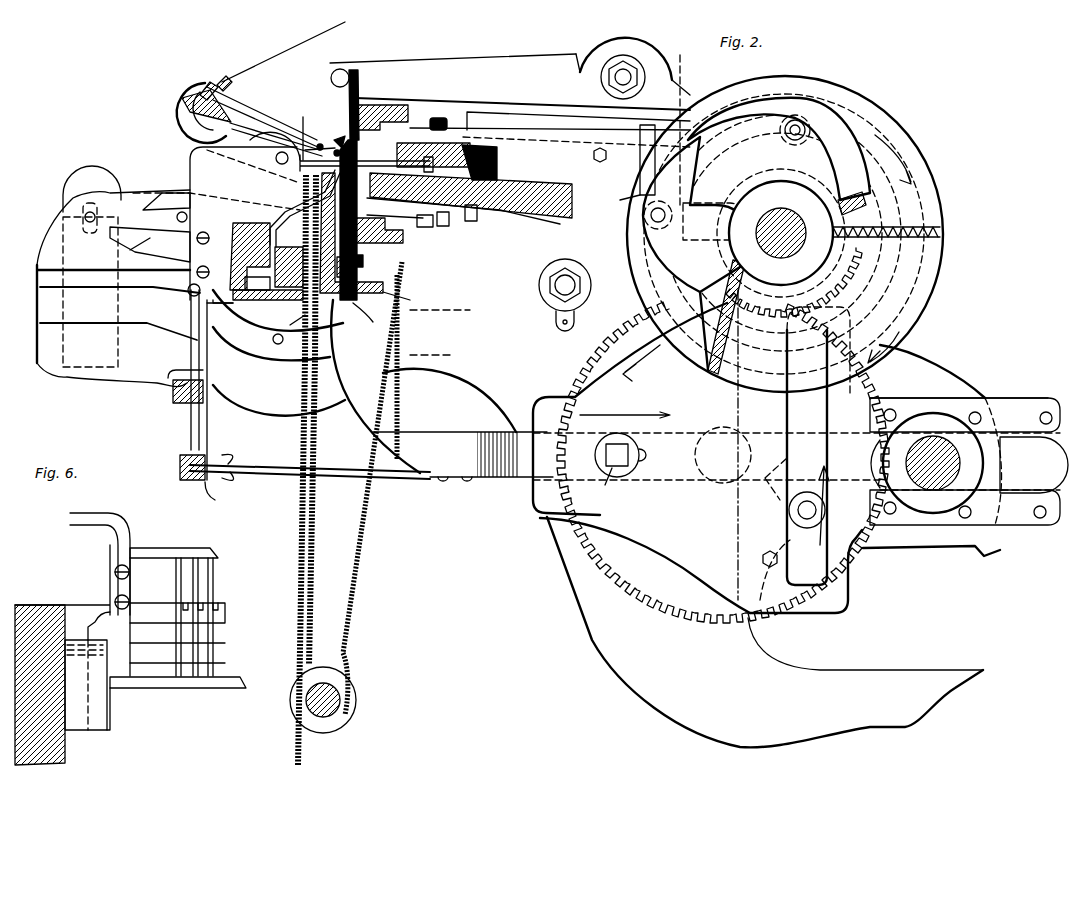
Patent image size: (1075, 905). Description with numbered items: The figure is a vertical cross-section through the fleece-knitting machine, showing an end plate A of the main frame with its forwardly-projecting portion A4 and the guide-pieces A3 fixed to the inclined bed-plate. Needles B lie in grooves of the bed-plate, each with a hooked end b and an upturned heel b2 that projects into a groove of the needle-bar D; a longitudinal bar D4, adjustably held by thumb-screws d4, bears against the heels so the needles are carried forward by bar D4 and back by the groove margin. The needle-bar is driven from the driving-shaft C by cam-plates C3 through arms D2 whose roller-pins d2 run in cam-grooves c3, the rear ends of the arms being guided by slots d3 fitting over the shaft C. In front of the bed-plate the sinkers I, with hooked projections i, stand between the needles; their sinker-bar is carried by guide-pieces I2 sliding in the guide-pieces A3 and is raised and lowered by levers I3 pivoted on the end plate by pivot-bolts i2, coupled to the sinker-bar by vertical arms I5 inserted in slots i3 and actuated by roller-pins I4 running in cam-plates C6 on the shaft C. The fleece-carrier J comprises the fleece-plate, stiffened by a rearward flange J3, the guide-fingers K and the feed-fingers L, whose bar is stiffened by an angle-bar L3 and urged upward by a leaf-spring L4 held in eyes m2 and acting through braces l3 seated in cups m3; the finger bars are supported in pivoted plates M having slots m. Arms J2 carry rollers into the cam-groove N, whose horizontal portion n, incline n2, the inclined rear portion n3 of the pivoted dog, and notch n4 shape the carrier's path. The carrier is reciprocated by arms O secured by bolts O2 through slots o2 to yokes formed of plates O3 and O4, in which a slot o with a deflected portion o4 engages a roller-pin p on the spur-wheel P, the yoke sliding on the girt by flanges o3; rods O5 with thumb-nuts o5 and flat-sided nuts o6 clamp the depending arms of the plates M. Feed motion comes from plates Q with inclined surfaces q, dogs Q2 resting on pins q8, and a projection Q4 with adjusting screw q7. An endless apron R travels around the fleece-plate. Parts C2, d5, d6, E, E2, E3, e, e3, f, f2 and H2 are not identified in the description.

The end plates A is at (461, 332).
The guide-pieces A3 is at (397, 240).
The forwardly-projecting portions of end plates A4 is at (191, 313).
The needles B is at (423, 228).
The hooked ends b is at (304, 130).
The heels b2 is at (443, 226).
The driving-shaft C is at (781, 233).
The gear C2 is at (770, 288).
The cam-plates C3 is at (785, 234).
The cam-plates C6 is at (784, 234).
The cam-grooves c3 is at (779, 156).
The needle-bar D is at (486, 162).
The arms D2 is at (633, 160).
The longitudinal bar D4 is at (472, 221).
The roller-pins d2 is at (604, 227).
The slots d3 is at (694, 255).
The thumb-screws d4 is at (576, 138).
The nut d5 is at (596, 155).
The lug d6 is at (619, 204).
The lever E is at (292, 135).
The lever E2 is at (181, 113).
The lever head E3 is at (202, 92).
The pin e is at (316, 134).
The pin e3 is at (226, 76).
The bolt f is at (575, 285).
The boss f2 is at (573, 322).
The bearing H2 is at (965, 461).
The sinkers I is at (351, 233).
The guide-pieces I2 is at (365, 258).
The levers I3 is at (510, 129).
The roller-pins I4 is at (361, 103).
The vertical arms I5 is at (348, 103).
The hooked projections i is at (347, 149).
The pivot-bolts i2 is at (631, 77).
The slots i3 is at (340, 58).
The fleece-carrier J is at (268, 143).
The arms J2 is at (293, 318).
The flange J3 is at (368, 305).
The guide-fingers K is at (289, 248).
The feed-fingers L is at (298, 208).
The angle-bar L3 is at (244, 309).
The leaf-spring L4 is at (185, 396).
The braces l3 is at (195, 322).
The plates M is at (216, 180).
The slots m is at (257, 283).
The eyes m2 is at (176, 400).
The cups m3 is at (191, 425).
The cam-grooves N is at (87, 301).
The horizontal groove portion n is at (139, 303).
The inclined surface n2 is at (250, 360).
The rear portion of dog n3 is at (287, 338).
The notch n4 is at (188, 292).
The arms O is at (605, 390).
The bolts O2 is at (640, 455).
The yoke plate O3 is at (628, 536).
The yoke plate O4 is at (850, 570).
The rods O5 is at (282, 470).
The transverse slots o is at (818, 446).
The slots o2 is at (607, 484).
The flanges o3 is at (903, 398).
The curved slot portion o4 is at (797, 495).
The thumb-nuts o5 is at (237, 473).
The flat-sided nuts o6 is at (220, 495).
The spur-wheels P is at (723, 462).
The roller-pins p is at (812, 522).
The cam plates Q is at (95, 247).
The dogs Q2 is at (166, 201).
The vertical projection Q4 is at (92, 189).
The inclined cam-surfaces q is at (147, 243).
The screw q7 is at (95, 212).
The pins q8 is at (177, 217).
The endless apron R is at (357, 534).